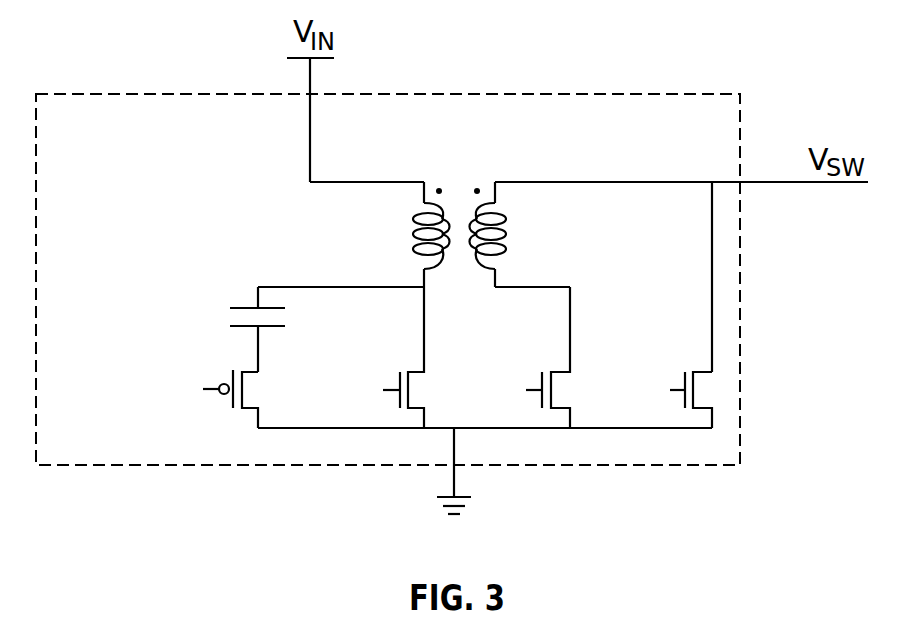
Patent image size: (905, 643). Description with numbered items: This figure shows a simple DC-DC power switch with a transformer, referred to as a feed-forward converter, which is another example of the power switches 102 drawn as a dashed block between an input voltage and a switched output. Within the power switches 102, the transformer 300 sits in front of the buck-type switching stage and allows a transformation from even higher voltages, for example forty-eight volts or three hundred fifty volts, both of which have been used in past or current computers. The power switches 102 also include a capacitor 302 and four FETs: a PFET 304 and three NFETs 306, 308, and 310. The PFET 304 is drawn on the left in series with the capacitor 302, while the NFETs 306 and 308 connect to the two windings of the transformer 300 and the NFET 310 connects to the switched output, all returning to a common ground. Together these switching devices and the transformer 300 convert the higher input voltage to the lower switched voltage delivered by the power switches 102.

The power switches 102 is at (98, 168).
The transformer 300 is at (408, 234).
The capacitor 302 is at (228, 313).
The PFET 304 is at (200, 388).
The NFET 306 is at (395, 385).
The NFET 308 is at (535, 385).
The NFET 310 is at (670, 385).